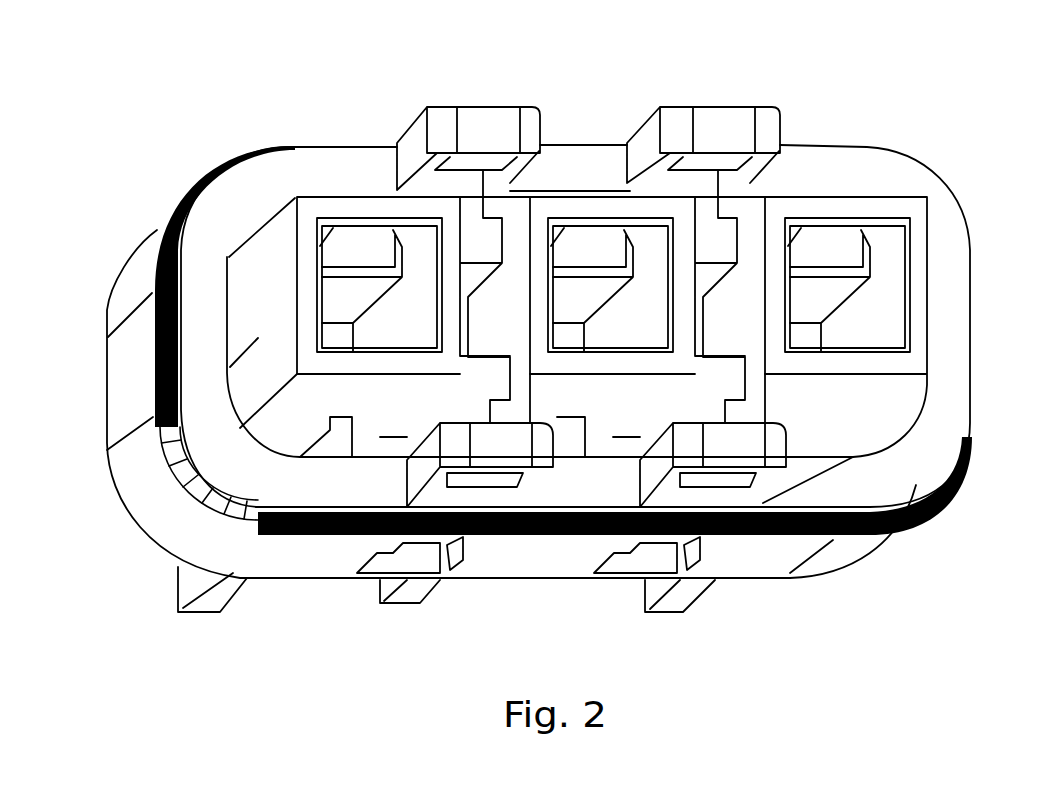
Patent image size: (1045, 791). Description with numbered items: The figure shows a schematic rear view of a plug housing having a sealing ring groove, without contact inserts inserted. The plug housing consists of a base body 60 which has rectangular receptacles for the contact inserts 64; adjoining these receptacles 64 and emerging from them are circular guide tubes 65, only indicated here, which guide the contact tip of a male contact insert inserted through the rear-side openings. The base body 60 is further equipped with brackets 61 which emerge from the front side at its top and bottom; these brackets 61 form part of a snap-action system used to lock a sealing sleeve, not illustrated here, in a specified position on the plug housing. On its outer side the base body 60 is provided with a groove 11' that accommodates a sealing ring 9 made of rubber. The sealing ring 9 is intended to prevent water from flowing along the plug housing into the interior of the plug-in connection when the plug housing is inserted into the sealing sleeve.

The sealing ring 9 is at (200, 160).
The groove 11' is at (171, 543).
The base body 60 is at (114, 352).
The brackets 61 is at (497, 118).
The receptacles for the contact inserts 64 is at (880, 363).
The guide tubes 65 is at (125, 496).